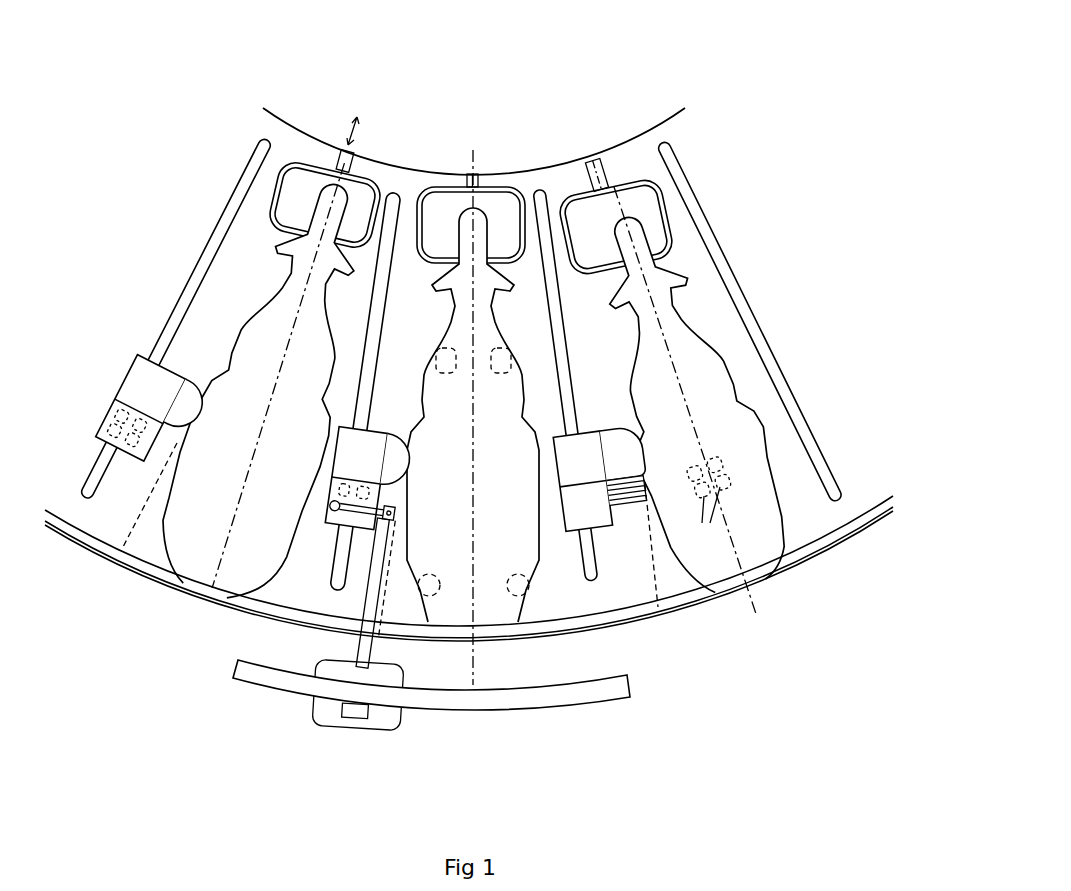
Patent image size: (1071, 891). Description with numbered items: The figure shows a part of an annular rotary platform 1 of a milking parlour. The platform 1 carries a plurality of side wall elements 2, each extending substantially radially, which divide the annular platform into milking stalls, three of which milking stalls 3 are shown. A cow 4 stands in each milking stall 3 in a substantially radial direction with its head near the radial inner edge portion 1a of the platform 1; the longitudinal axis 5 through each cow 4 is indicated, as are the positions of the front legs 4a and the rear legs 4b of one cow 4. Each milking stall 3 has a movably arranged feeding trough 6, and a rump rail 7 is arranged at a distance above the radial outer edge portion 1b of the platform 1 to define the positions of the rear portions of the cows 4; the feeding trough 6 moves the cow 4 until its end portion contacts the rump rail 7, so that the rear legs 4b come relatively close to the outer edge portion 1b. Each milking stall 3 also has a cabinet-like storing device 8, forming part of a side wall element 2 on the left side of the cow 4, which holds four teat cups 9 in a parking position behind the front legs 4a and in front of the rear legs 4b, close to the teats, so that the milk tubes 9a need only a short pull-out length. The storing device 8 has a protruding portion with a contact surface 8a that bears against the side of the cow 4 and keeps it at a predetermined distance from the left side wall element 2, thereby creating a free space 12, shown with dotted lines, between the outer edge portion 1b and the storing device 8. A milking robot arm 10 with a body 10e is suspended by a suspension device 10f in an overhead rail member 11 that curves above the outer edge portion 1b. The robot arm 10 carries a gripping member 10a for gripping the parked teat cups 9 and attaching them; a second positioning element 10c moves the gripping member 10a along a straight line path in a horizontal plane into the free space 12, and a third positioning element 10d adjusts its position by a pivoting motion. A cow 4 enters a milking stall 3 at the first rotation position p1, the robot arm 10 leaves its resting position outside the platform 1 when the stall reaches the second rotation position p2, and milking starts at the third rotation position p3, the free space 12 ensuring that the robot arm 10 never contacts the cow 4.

The rotary platform 1 is at (565, 187).
The radial inner edge portion 1a is at (662, 125).
The radial outer edge portion 1b is at (765, 585).
The side wall element 2 is at (187, 287).
The milking stall 3 is at (240, 280).
The cow 4 is at (257, 363).
The front legs 4a is at (443, 360).
The rear legs 4b is at (512, 590).
The longitudinal axis 5 is at (677, 397).
The feeding trough 6 is at (287, 177).
The rump rail 7 is at (190, 590).
The storing device 8 is at (138, 397).
The contact surface 8a is at (197, 418).
The teat cups 9 is at (100, 430).
The milk tubes 9a is at (630, 507).
The milking robot arm 10 is at (317, 757).
The gripping member 10a is at (325, 510).
The second positioning element 10c is at (378, 587).
The third positioning element 10d is at (357, 517).
The body 10e is at (320, 713).
The suspension device 10f is at (358, 713).
The rail member 11 is at (480, 702).
The free space 12 is at (112, 507).
The first rotation position p1 is at (313, 152).
The second rotation position p2 is at (488, 182).
The third rotation position p3 is at (622, 168).